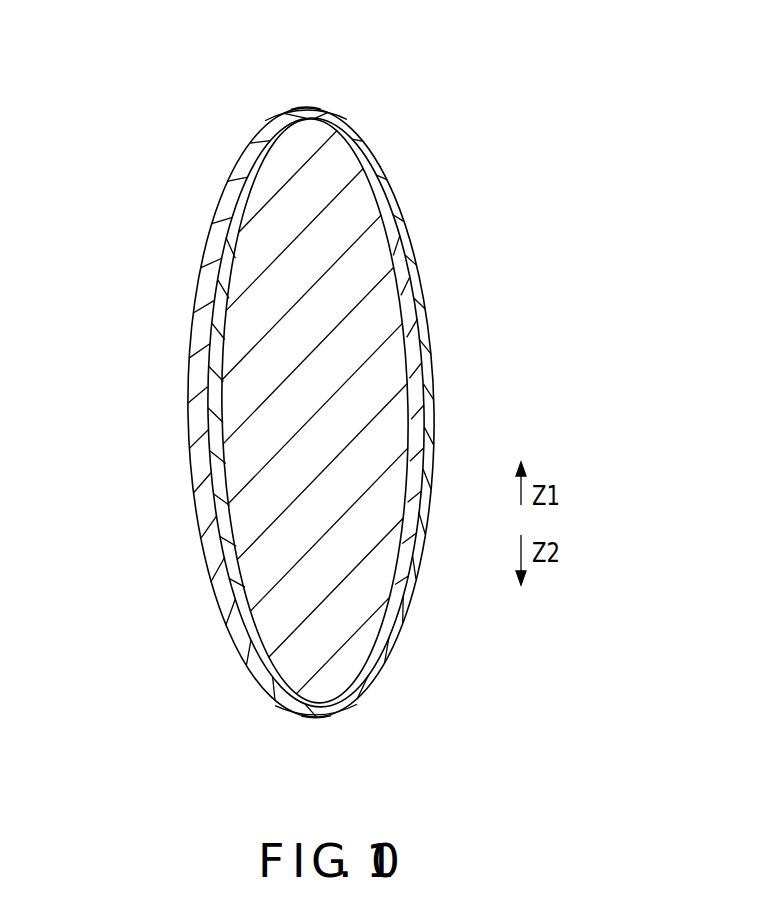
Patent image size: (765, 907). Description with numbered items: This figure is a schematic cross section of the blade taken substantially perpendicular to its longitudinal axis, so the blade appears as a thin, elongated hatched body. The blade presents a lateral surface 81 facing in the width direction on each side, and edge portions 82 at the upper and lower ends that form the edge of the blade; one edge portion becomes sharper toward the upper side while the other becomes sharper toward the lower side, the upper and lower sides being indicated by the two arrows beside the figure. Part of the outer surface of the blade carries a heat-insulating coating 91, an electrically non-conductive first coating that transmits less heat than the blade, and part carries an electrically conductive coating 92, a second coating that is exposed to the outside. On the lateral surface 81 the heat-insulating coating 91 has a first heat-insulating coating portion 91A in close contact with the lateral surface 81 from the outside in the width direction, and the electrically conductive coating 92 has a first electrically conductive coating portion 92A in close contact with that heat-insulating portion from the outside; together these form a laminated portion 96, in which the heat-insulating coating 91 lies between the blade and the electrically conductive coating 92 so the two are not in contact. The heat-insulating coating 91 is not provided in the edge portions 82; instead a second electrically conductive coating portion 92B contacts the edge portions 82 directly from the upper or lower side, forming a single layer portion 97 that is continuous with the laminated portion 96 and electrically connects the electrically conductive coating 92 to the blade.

The lateral surface 81 is at (412, 348).
The edge portions 82 is at (312, 108).
The heat-insulating coating 91 is at (385, 237).
The first heat-insulating coating portion 91A is at (410, 430).
The electrically conductive coating 92 is at (410, 270).
The first electrically conductive coating portion 92A is at (420, 380).
The second electrically conductive coating portion 92B is at (298, 107).
The laminated portion 96 is at (313, 401).
The single layer portion 97 is at (311, 423).